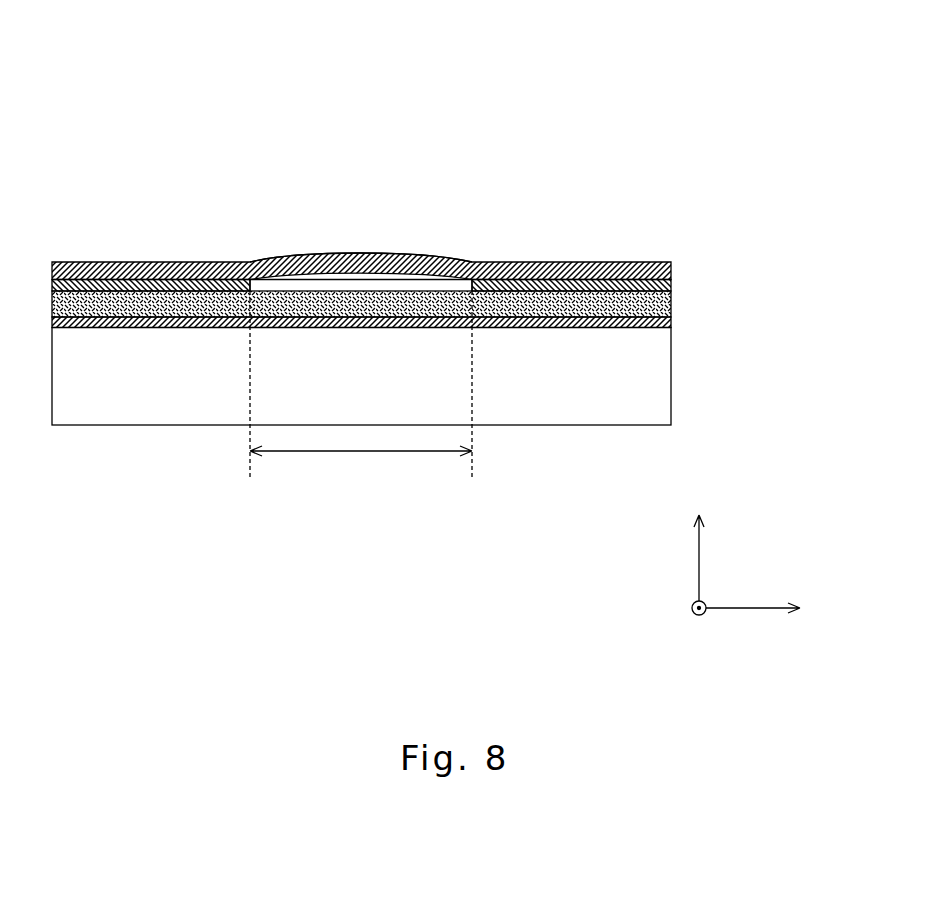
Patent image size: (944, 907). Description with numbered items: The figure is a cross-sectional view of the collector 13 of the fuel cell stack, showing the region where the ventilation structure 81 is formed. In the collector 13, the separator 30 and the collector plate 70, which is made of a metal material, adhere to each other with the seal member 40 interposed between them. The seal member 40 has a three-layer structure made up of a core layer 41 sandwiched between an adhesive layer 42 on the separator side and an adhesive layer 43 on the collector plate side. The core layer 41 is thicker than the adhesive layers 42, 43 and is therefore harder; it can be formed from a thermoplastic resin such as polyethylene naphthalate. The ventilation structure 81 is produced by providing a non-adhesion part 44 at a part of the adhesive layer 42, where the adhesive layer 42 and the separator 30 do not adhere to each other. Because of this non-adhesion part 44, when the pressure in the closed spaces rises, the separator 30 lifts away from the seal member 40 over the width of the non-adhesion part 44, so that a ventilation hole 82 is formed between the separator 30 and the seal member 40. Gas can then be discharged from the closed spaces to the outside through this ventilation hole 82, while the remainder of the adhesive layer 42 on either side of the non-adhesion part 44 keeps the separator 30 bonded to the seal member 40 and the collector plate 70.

The collector 13 is at (655, 97).
The separator 30 is at (643, 264).
The seal member 40 is at (803, 253).
The core layer 41 is at (671, 302).
The adhesive layer 42 is at (671, 290).
The adhesive layer 43 is at (671, 323).
The non-adhesion part 44 is at (288, 286).
The collector plate 70 is at (671, 388).
The ventilation structure 81 is at (357, 451).
The ventilation hole 82 is at (363, 278).